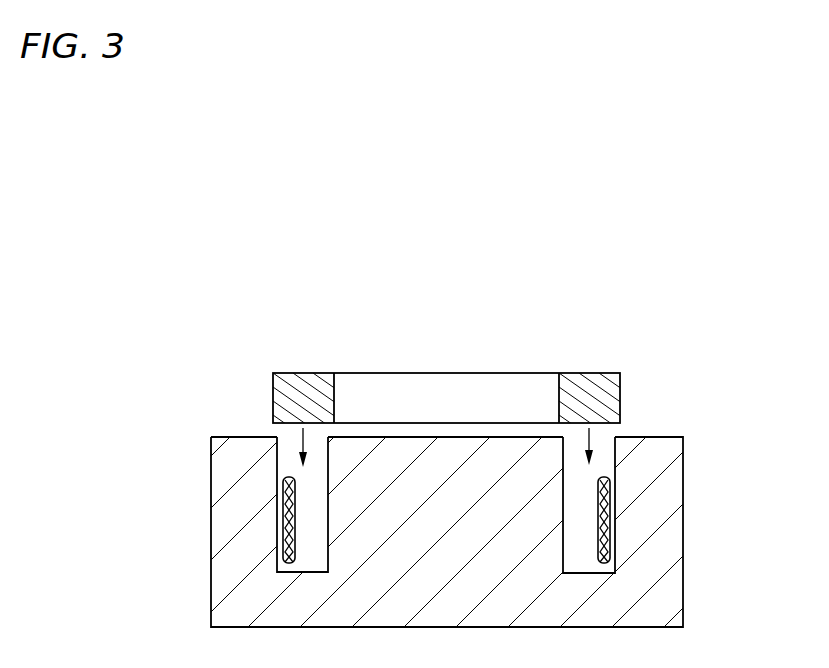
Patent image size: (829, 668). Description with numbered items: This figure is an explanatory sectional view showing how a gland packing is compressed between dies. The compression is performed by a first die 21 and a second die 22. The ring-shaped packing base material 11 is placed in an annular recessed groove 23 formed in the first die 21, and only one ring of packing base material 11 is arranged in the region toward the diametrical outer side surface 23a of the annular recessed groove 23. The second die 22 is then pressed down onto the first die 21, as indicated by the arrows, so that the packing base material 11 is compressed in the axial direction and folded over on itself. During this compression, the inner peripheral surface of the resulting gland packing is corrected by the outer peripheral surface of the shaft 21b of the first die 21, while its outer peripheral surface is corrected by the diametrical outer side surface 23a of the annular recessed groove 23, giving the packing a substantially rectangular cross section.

The first die 21 is at (683, 476).
The shaft of the first die 21b is at (406, 448).
The second die 22 is at (622, 385).
The annular recessed groove 23 is at (576, 478).
The diametrical outer side surface of the annular recessed groove 23a is at (278, 533).
The packing base material 11 is at (605, 521).